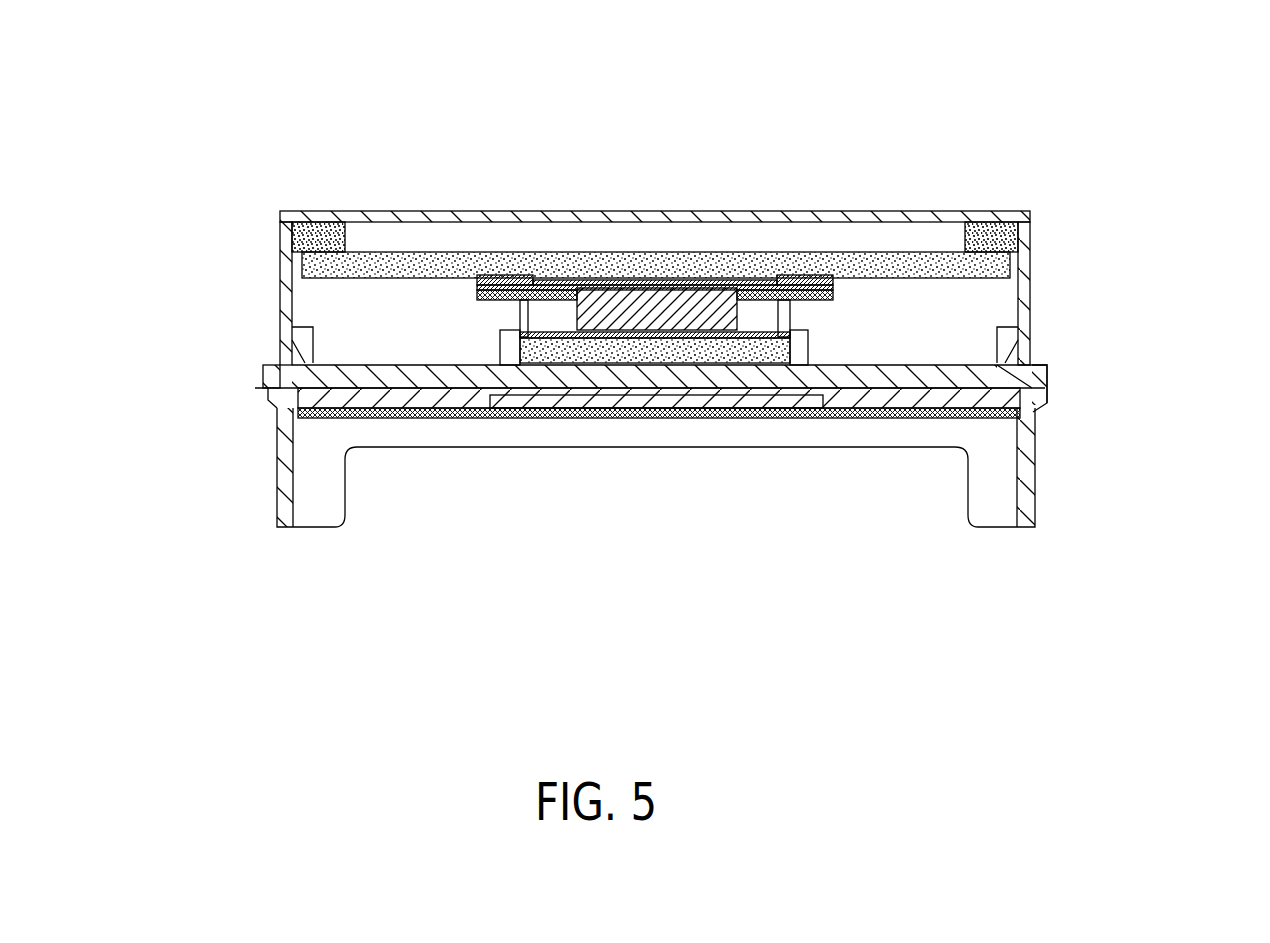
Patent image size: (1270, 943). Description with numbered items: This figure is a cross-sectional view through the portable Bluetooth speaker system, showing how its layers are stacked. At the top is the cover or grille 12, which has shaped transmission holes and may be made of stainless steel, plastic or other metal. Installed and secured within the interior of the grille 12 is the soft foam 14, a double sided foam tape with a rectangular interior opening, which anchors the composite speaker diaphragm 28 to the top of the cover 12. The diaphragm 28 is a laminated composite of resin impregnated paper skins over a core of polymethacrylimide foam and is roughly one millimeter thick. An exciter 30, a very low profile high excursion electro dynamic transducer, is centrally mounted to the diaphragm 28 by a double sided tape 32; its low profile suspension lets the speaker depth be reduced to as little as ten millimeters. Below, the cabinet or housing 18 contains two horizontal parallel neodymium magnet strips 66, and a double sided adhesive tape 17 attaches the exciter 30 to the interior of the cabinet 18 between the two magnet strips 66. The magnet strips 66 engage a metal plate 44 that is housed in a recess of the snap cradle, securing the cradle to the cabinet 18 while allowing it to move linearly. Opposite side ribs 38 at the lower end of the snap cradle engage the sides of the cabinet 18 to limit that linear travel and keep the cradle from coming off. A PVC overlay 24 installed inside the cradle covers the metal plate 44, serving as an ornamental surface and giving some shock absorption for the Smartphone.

The grille 12 is at (608, 210).
The soft foam 14 is at (318, 210).
The double sided adhesive tape 17 is at (470, 392).
The cabinet 18 is at (293, 347).
The PVC overlay 24 is at (880, 418).
The composite speaker diaphragm 28 is at (1010, 262).
The exciter 30 is at (790, 325).
The double sided tape 32 is at (810, 285).
The side ribs 38 is at (263, 388).
The metal plate 44 is at (703, 418).
The neodymium magnet strips 66 is at (500, 352).